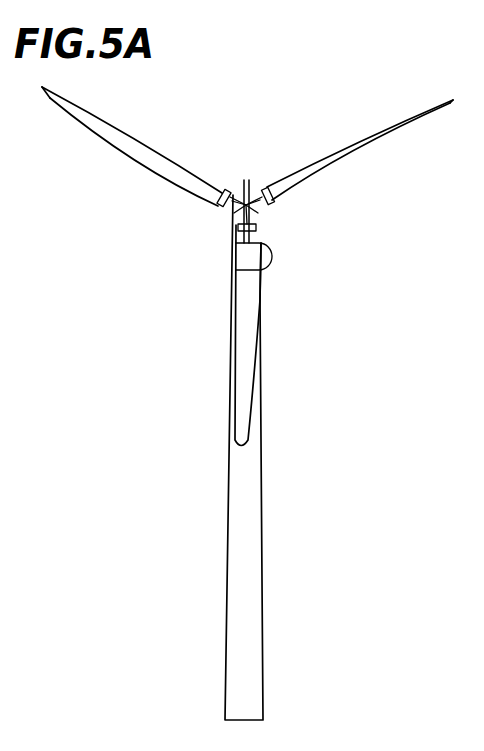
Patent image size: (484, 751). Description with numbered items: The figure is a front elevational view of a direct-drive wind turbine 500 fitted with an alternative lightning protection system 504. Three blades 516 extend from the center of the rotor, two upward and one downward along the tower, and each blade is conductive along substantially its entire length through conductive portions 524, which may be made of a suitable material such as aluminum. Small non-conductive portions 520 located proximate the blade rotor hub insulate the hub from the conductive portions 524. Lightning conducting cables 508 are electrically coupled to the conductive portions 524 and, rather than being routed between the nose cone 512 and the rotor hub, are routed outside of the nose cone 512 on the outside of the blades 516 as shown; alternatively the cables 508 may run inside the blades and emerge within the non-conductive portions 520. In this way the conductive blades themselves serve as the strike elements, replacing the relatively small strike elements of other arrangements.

The wind turbine 500 is at (247, 382).
The lightning protection system 504 is at (250, 172).
The lightning conducting cables 508 is at (265, 205).
The nose cone 512 is at (267, 217).
The blades 516 is at (247, 245).
The non-conductive portions 520 is at (228, 190).
The conductive portions 524 is at (156, 157).